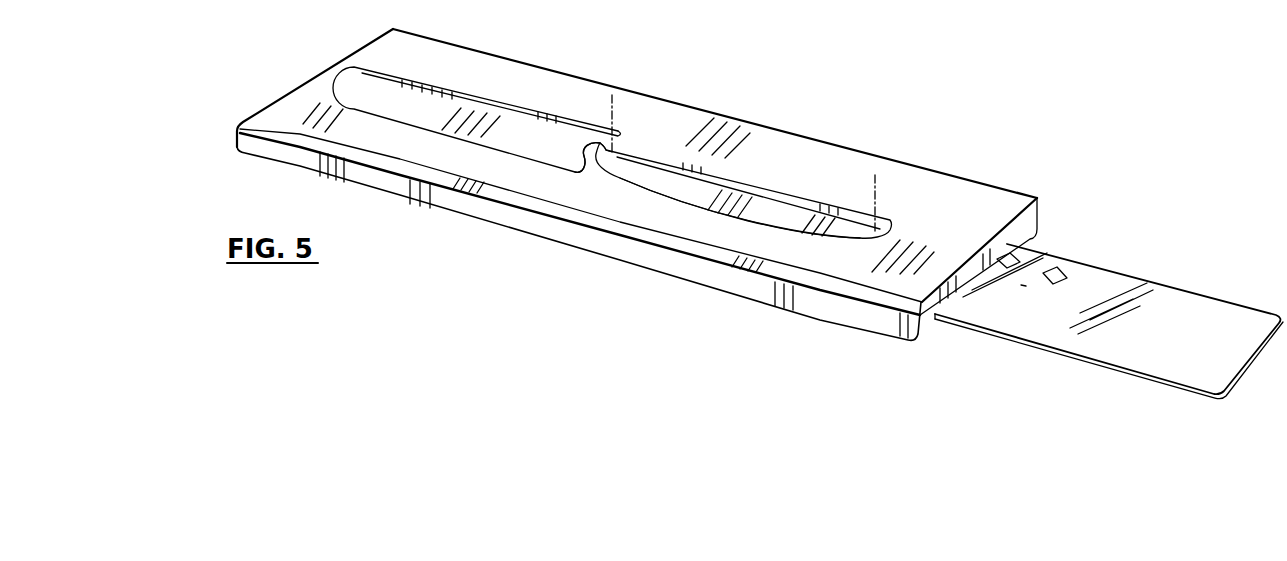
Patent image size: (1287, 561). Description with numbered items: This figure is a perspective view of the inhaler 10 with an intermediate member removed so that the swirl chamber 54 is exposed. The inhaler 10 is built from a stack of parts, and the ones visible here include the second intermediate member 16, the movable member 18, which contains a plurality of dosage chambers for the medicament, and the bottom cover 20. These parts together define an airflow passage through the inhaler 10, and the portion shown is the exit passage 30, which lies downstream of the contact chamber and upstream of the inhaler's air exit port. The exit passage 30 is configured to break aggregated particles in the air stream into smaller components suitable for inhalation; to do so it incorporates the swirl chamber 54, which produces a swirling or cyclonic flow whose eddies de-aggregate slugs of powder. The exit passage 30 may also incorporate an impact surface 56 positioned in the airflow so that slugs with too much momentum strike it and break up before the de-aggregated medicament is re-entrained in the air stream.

The inhaler 10 is at (911, 113).
The second intermediate member 16 is at (988, 194).
The movable member 18 is at (1167, 303).
The bottom cover 20 is at (757, 288).
The exit passage 30 is at (668, 174).
The swirl chamber 54 is at (643, 172).
The impact surface 56 is at (611, 160).